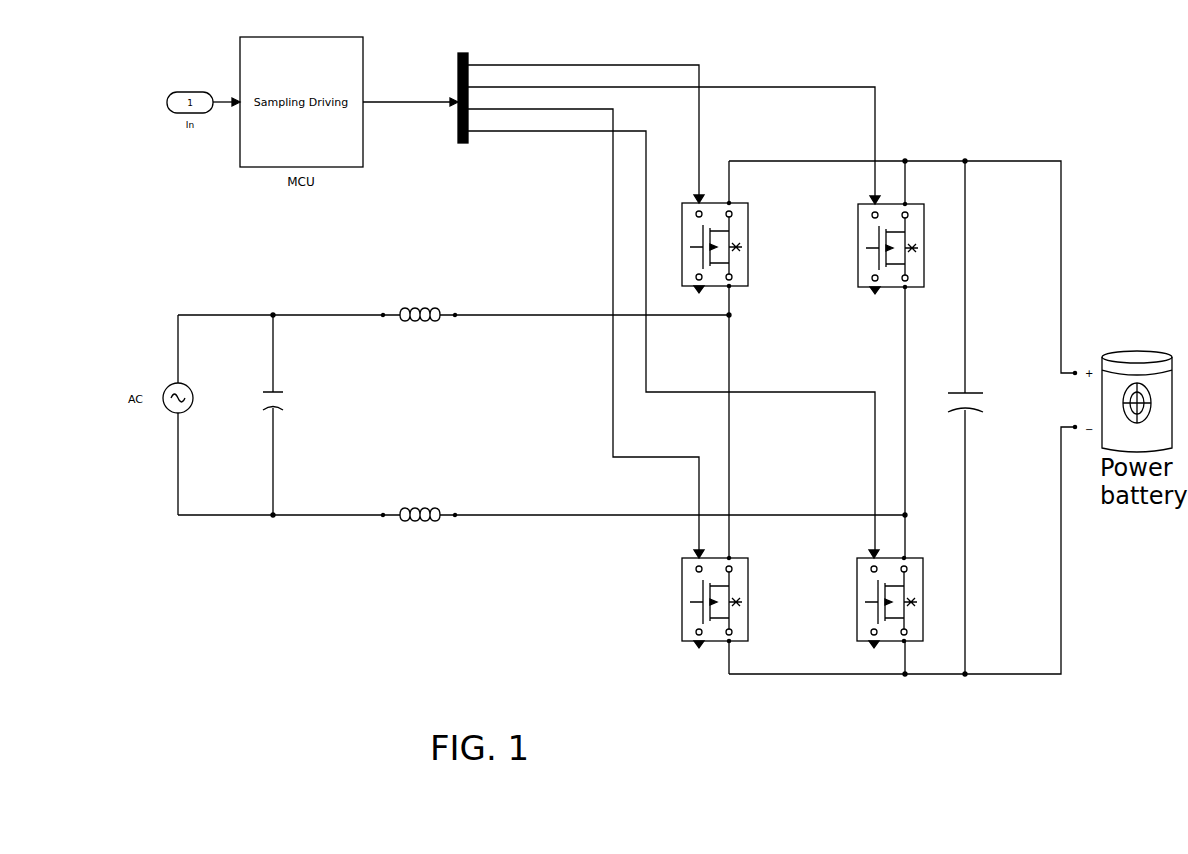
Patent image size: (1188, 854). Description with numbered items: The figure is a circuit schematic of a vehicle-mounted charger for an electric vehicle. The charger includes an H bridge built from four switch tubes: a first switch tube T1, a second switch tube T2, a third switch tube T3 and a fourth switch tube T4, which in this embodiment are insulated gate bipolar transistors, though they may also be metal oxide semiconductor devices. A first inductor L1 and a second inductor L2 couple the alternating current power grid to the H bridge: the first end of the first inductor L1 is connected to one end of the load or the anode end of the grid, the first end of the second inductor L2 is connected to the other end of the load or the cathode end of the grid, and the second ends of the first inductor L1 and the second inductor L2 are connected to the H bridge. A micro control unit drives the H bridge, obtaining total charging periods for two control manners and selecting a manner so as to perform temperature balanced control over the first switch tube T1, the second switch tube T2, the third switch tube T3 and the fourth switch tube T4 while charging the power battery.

The first switch tube T1 is at (724, 244).
The second switch tube T2 is at (724, 599).
The third switch tube T3 is at (900, 245).
The fourth switch tube T4 is at (899, 599).
The first inductor L1 is at (453, 334).
The second inductor L2 is at (541, 532).